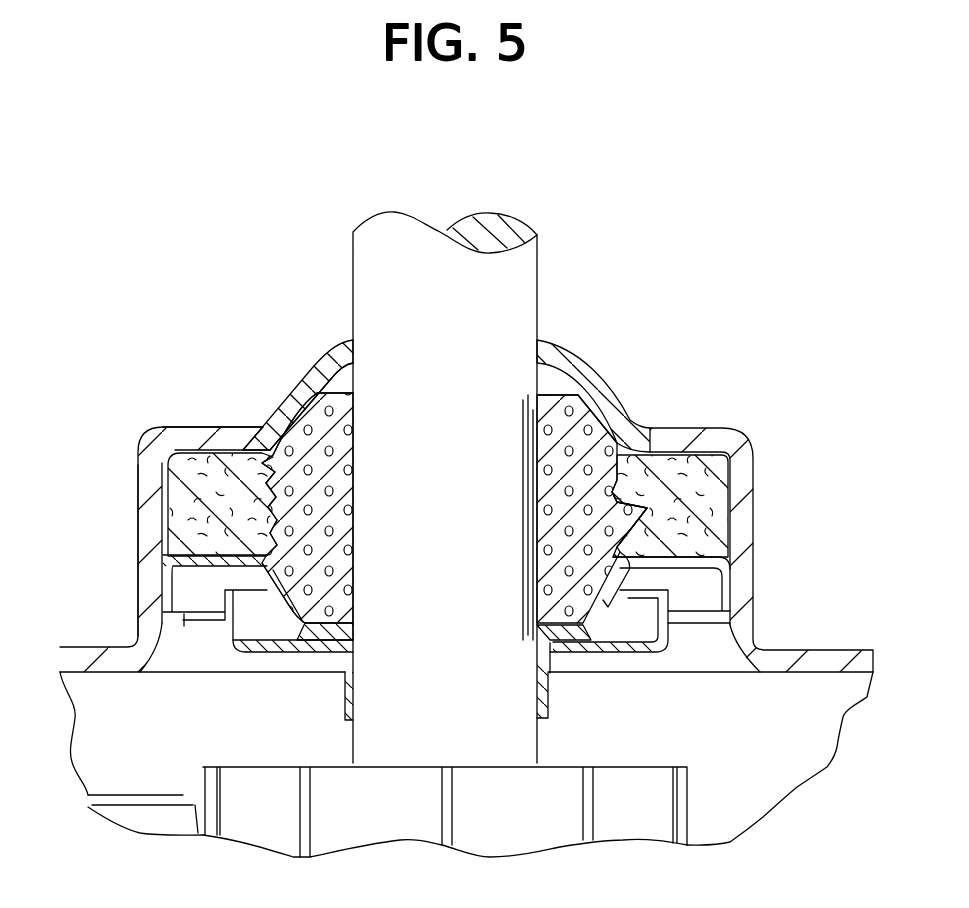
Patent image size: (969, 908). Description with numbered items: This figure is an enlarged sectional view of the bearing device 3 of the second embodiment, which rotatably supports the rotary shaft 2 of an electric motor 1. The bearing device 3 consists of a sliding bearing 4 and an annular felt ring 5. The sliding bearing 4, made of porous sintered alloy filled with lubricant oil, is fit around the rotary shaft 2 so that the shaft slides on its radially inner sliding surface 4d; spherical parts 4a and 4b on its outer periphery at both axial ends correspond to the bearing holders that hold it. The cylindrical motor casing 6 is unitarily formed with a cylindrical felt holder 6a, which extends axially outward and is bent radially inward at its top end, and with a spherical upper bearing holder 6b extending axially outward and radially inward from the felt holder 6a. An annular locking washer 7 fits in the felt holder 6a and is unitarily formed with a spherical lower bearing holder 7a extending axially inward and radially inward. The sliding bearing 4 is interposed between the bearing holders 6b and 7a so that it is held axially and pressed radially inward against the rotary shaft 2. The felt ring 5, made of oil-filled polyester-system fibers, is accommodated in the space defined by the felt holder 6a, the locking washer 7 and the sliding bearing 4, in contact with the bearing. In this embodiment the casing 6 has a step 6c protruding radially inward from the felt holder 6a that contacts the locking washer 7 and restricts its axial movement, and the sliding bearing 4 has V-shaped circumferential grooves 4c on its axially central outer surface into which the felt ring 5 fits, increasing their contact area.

The electric motor 1 is at (790, 388).
The rotary shaft 2 is at (402, 236).
The bearing device 3 is at (710, 358).
The sliding bearing 4 is at (598, 424).
The spherical part 4a is at (293, 410).
The spherical part 4b is at (287, 612).
The groove 4c is at (615, 546).
The sliding surface 4d is at (577, 358).
The annular felt ring 5 is at (685, 468).
The motor casing 6 is at (78, 647).
The felt holder 6a is at (146, 473).
The spherical bearing holder 6b is at (245, 430).
The step 6c is at (173, 626).
The annular locking washer 7 is at (726, 585).
The spherical bearing holder 7a is at (622, 599).